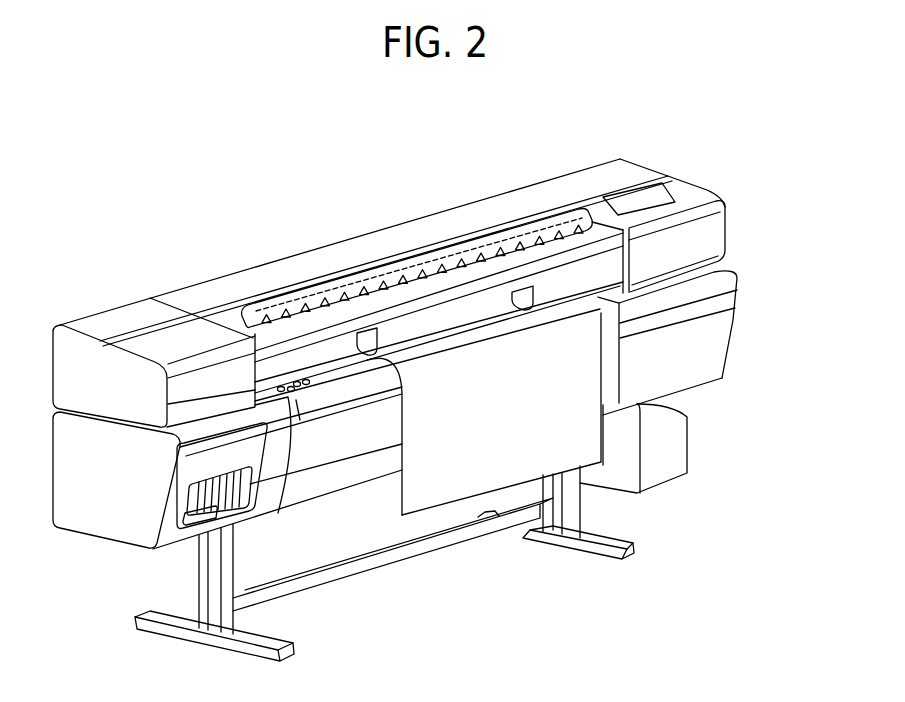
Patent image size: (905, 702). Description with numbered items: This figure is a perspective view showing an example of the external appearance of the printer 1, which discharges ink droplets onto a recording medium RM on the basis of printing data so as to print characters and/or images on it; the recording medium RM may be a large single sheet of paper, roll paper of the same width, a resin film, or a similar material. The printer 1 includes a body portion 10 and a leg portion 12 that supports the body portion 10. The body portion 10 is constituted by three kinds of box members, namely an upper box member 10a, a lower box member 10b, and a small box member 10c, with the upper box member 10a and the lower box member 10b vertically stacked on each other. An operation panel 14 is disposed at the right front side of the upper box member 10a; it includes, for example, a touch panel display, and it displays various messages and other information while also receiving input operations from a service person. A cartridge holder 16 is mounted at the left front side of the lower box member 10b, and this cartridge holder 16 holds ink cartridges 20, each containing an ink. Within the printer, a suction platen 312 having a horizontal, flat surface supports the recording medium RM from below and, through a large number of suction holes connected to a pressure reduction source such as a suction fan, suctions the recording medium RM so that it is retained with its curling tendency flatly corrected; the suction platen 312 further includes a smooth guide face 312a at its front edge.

The printer 1 is at (232, 185).
The body portion 10 is at (818, 212).
The upper box member 10a is at (727, 233).
The lower box member 10b is at (741, 300).
The small box member 10c is at (689, 447).
The leg portion 12 is at (583, 510).
The operation panel 14 is at (661, 185).
The cartridge holder 16 is at (178, 495).
The ink cartridges 20 is at (184, 518).
The suction platen 312 is at (342, 373).
The smooth guide face 312a is at (303, 407).
The recording medium RM is at (496, 462).